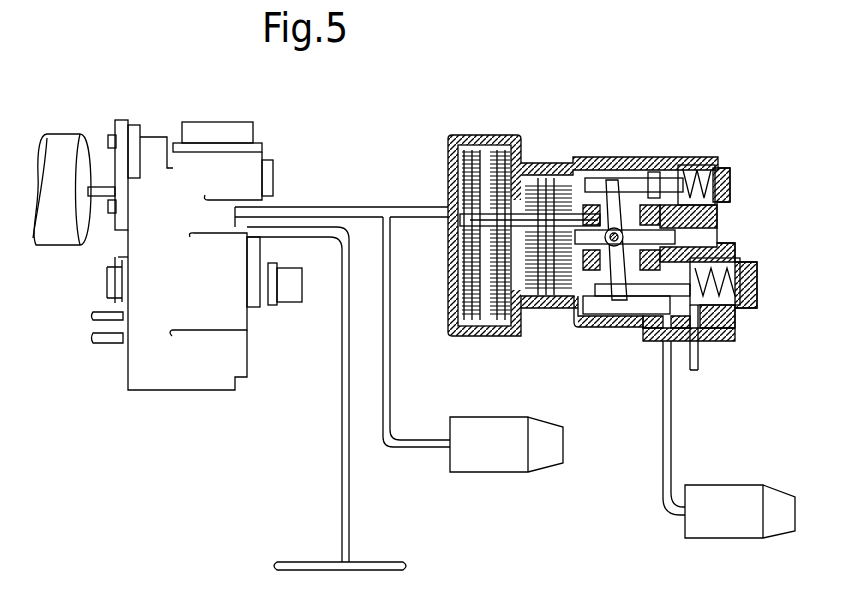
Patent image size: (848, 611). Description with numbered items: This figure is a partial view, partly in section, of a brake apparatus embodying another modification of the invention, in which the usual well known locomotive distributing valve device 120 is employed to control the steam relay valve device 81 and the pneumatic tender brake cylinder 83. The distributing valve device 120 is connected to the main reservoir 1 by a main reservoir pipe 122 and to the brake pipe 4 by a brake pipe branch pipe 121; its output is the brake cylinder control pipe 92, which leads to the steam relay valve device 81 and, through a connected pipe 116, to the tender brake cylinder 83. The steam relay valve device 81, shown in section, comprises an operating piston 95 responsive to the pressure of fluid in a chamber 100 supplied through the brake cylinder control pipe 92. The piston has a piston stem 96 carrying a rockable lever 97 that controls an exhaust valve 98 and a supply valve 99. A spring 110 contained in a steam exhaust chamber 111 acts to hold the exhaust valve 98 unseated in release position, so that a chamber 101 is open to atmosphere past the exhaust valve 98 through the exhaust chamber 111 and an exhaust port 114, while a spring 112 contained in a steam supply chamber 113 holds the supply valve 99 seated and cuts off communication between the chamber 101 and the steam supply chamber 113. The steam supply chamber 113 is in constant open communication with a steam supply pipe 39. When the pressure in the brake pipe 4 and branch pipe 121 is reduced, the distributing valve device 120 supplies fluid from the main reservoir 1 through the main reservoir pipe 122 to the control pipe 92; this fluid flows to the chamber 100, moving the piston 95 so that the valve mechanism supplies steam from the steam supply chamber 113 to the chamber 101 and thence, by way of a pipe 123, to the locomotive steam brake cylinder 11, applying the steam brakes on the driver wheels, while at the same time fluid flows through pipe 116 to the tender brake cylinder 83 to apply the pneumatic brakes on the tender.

The main reservoir 1 is at (50, 143).
The main reservoir pipe 122 is at (100, 190).
The locomotive distributing valve device 120 is at (216, 116).
The brake cylinder control pipe 92 is at (327, 208).
The chamber 100 is at (450, 183).
The operating piston 95 is at (465, 273).
The steam relay valve device 81 is at (590, 230).
The piston stem 96 is at (558, 180).
The rockable lever 97 is at (615, 167).
The exhaust valve 98 is at (653, 172).
The exhaust port 114 is at (692, 158).
The spring 110 is at (730, 180).
The steam exhaust chamber 111 is at (727, 207).
The spring 112 is at (740, 277).
The steam supply chamber 113 is at (720, 300).
The supply valve 99 is at (738, 327).
The chamber 101 is at (610, 308).
The steam supply pipe 39 is at (697, 370).
The brake pipe branch pipe 121 is at (343, 378).
The pipe 116 is at (388, 393).
The pneumatic tender brake cylinder 83 is at (523, 398).
The brake pipe 4 is at (302, 563).
The pipe 123 is at (662, 455).
The locomotive steam brake cylinder 11 is at (738, 483).